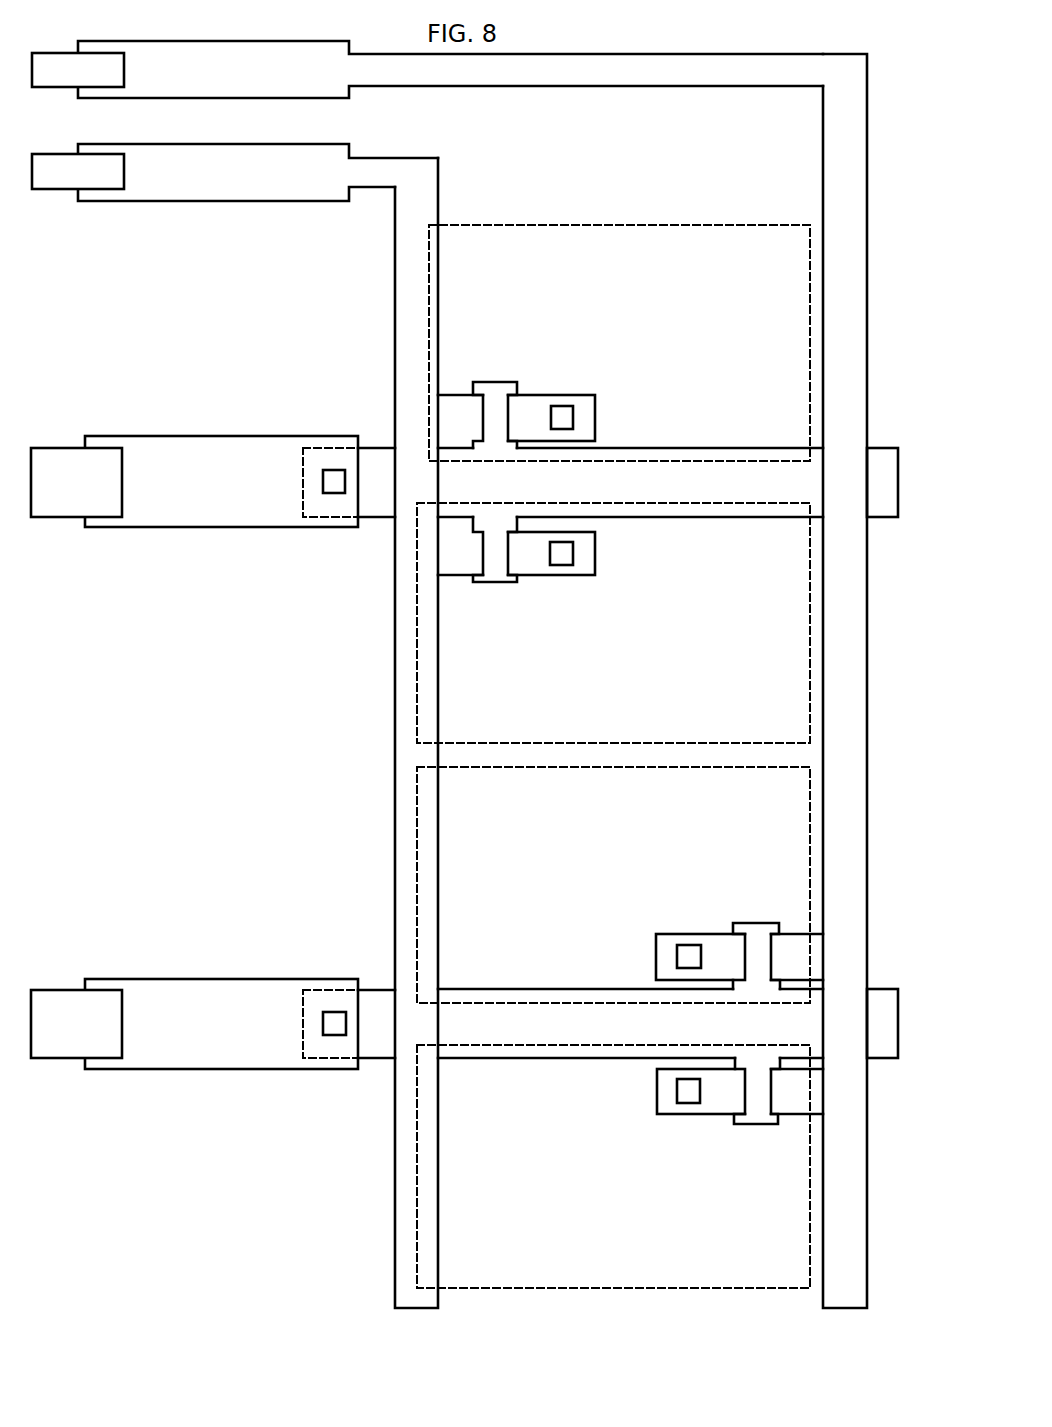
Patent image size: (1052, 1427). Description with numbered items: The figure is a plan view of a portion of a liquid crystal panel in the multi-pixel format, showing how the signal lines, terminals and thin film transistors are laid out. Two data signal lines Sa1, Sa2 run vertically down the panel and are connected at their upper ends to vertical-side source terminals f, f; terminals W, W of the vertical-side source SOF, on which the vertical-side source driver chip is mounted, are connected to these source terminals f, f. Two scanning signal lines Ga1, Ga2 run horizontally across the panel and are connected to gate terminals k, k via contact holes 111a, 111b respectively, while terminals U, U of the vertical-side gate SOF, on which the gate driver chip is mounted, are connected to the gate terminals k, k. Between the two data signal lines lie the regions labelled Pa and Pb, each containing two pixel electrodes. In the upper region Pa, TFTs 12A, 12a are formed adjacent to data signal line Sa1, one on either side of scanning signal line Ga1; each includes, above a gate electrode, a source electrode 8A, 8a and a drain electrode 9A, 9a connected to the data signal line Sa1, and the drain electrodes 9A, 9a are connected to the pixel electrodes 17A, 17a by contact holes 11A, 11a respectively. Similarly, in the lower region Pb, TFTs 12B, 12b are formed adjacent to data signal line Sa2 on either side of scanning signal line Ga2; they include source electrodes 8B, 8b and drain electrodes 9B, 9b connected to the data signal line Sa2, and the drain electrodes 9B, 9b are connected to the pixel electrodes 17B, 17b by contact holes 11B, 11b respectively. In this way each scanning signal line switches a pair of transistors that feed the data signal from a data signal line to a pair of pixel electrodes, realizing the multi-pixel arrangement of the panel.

The terminal of the vertical-side source SOF W is at (48, 88).
The vertical-side source terminal f is at (190, 98).
The data signal line Sa1 is at (392, 217).
The data signal line Sa2 is at (868, 218).
The scanning signal line Ga1 is at (372, 447).
The scanning signal line Ga2 is at (378, 988).
The gate terminal k is at (232, 527).
The terminal of the vertical-side gate SOF U is at (70, 518).
The contact hole 111a is at (333, 492).
The contact hole 111b is at (333, 1020).
The pixel region Pa is at (619, 301).
The pixel region Pb is at (562, 1189).
The pixel electrode 17A is at (528, 225).
The pixel electrode 17a is at (417, 697).
The pixel electrode 17B is at (415, 790).
The pixel electrode 17b is at (417, 1115).
The source electrode 8A is at (458, 413).
The source electrode 8a is at (458, 548).
The source electrode 8B is at (790, 945).
The source electrode 8b is at (790, 1092).
The drain electrode 9A is at (590, 423).
The drain electrode 9a is at (534, 563).
The drain electrode 9B is at (717, 945).
The drain electrode 9b is at (720, 1100).
The contact hole 11A is at (565, 415).
The contact hole 11a is at (565, 555).
The contact hole 11B is at (690, 960).
The contact hole 11b is at (677, 1095).
The TFT 12A is at (499, 369).
The TFT 12a is at (487, 603).
The TFT 12B is at (815, 923).
The TFT 12b is at (762, 1140).